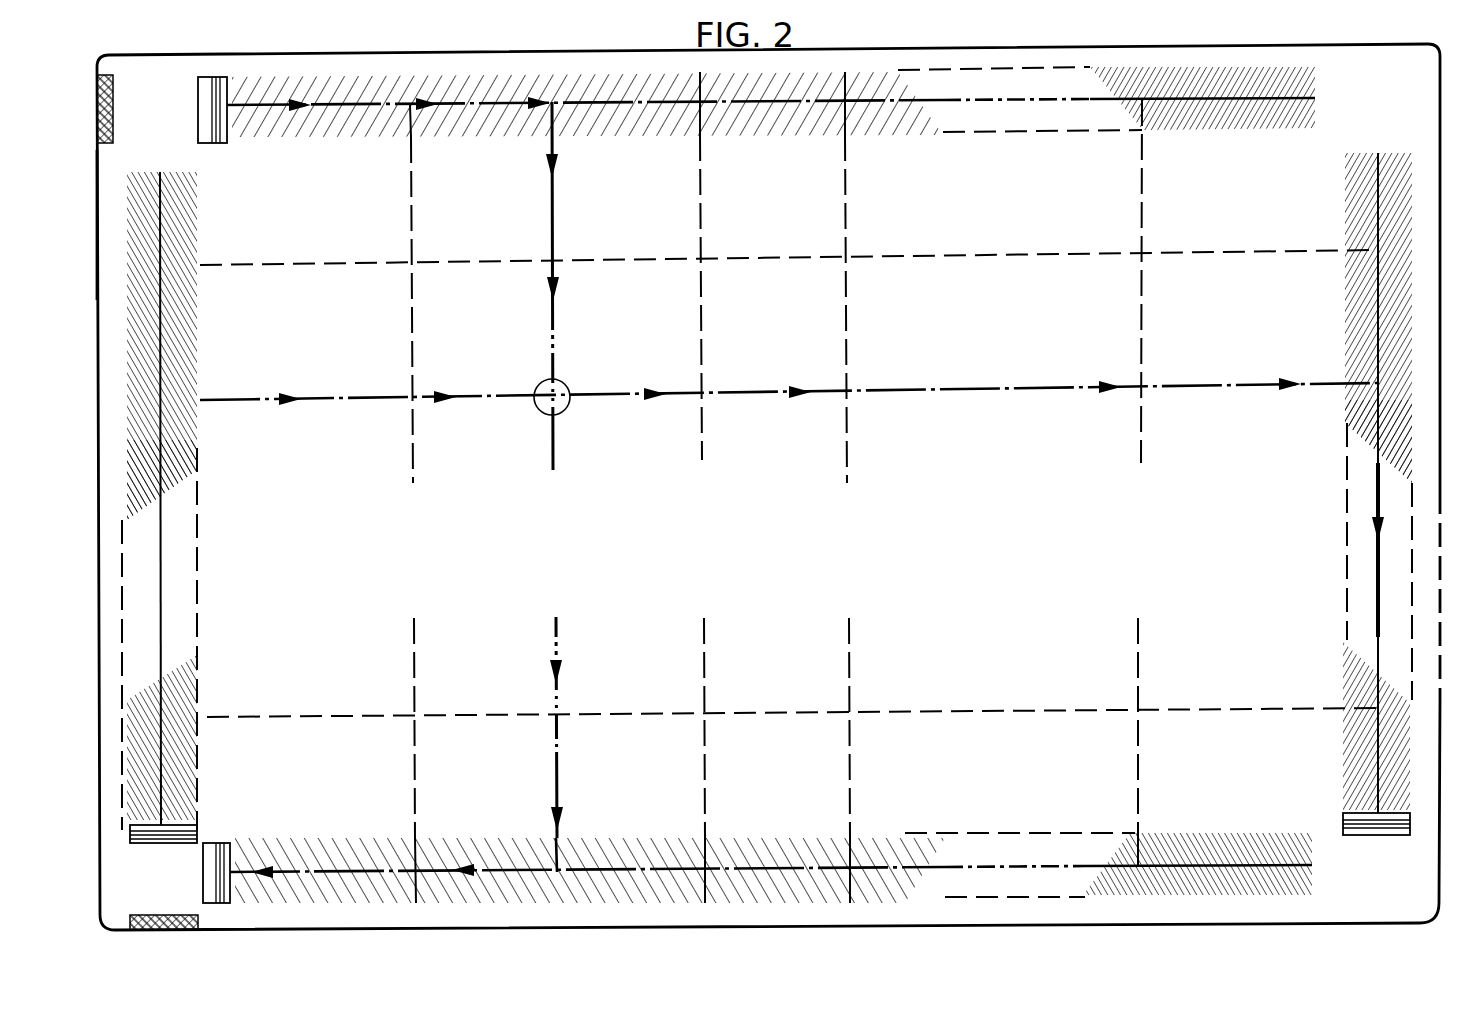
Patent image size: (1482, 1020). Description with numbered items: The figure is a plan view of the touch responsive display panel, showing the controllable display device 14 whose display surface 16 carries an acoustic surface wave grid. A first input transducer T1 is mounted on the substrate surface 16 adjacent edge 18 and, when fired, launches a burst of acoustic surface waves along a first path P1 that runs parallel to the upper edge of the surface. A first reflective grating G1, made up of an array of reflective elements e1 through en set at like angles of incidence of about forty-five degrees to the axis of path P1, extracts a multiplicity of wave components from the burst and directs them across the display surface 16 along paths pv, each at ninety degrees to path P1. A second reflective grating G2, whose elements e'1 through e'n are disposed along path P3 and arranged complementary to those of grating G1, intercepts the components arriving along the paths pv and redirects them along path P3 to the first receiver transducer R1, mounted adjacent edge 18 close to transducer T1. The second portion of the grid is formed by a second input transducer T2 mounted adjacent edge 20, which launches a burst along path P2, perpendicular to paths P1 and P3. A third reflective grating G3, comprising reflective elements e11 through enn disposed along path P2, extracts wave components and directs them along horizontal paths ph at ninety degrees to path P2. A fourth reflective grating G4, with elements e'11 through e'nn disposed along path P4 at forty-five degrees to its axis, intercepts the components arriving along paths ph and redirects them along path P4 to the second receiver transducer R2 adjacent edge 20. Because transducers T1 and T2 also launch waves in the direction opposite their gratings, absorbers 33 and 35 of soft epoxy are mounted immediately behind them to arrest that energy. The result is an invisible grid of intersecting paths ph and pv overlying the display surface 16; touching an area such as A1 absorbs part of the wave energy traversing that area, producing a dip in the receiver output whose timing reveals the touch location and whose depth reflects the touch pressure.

The controllable display device 14 is at (1441, 105).
The display surface 16 is at (1087, 173).
The edge 18 is at (97, 232).
The edge 20 is at (402, 932).
The absorber 33 is at (97, 112).
The absorber 35 is at (108, 925).
The input transducer T1 is at (218, 77).
The input transducer T2 is at (130, 832).
The output transducer R1 is at (213, 905).
The output transducer R2 is at (1390, 835).
The reflective element e1 is at (252, 82).
The reflective element en is at (1273, 73).
The reflective element enn is at (163, 180).
The reflective element e'nn is at (1349, 483).
The reflective element e11 is at (190, 763).
The reflective element e'1 is at (590, 850).
The nth lower emitter element e'n is at (1197, 829).
The reflective element e'11 is at (1344, 616).
The first path P1 is at (895, 100).
The second path P2 is at (160, 337).
The third path P3 is at (758, 848).
The fourth path P4 is at (1375, 320).
The first reflective grating G1 is at (412, 77).
The second reflective grating G2 is at (618, 847).
The third reflective grating G3 is at (193, 413).
The fourth reflective grating G4 is at (1357, 393).
The touched area A1 is at (570, 402).
The paths pv is at (557, 335).
The paths ph is at (368, 264).